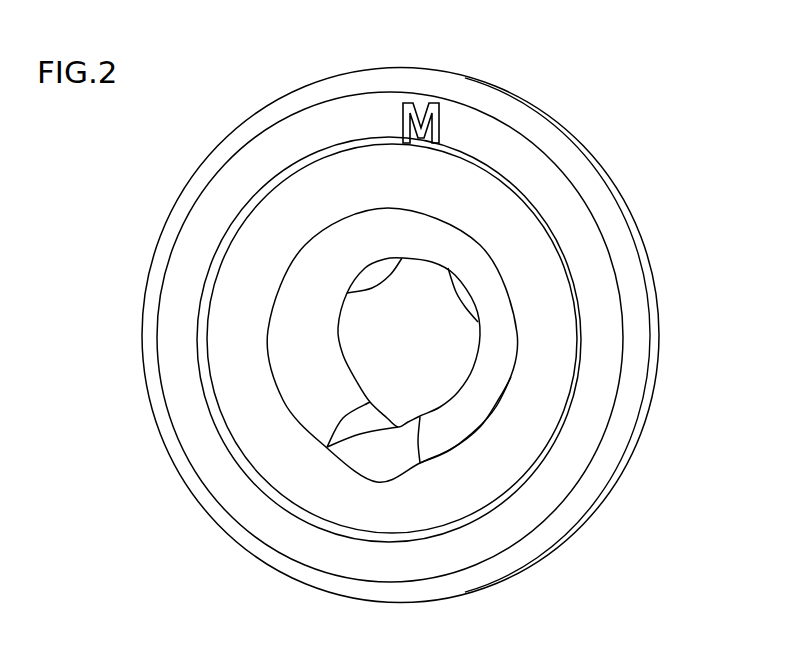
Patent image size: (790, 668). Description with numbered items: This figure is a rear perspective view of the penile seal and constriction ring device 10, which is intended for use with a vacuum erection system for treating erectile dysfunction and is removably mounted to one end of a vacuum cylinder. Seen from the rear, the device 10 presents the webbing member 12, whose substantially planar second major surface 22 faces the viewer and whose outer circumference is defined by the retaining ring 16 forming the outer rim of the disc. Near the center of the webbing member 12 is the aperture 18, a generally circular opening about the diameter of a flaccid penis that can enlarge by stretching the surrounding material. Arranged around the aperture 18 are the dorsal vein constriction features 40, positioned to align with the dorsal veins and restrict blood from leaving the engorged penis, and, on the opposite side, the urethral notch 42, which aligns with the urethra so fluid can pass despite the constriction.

The penile seal and constriction ring device 10 is at (606, 93).
The webbing member 12 is at (253, 231).
The retaining ring 16 is at (642, 259).
The aperture 18 is at (458, 390).
The second major surface 22 is at (224, 316).
The dorsal vein constriction features 40 is at (465, 301).
The urethral notch 42 is at (384, 440).